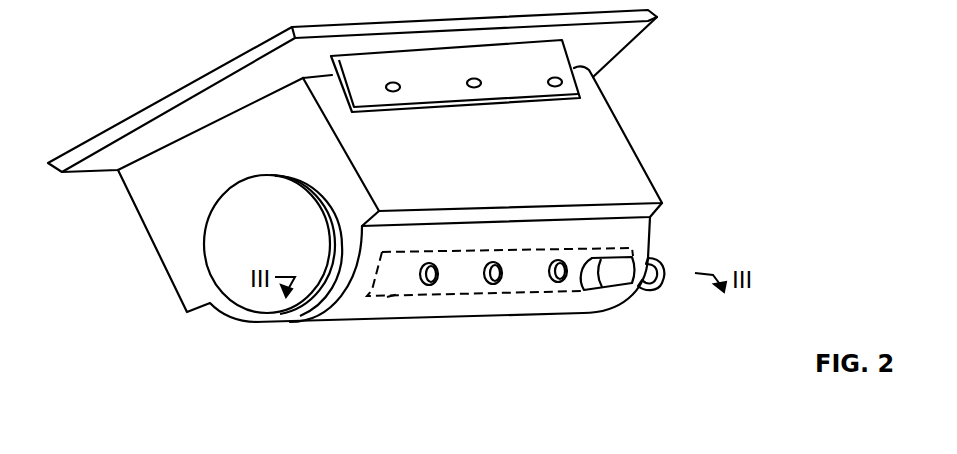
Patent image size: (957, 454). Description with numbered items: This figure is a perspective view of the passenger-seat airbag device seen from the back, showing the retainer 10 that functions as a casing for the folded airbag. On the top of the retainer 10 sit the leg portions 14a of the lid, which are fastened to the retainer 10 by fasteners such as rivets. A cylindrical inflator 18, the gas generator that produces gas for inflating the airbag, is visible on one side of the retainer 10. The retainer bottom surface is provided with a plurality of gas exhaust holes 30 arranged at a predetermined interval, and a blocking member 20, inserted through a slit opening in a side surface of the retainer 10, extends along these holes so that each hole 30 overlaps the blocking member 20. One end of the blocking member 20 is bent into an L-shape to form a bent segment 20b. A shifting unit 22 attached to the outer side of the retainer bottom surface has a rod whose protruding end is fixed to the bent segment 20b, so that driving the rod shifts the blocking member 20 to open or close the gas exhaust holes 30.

The retainer 10 is at (622, 158).
The leg portions 14a is at (511, 82).
The cylindrical inflator 18 is at (233, 220).
The blocking member 20 is at (387, 300).
The bent segment 20b is at (662, 266).
The shifting unit 22 is at (608, 281).
The gas exhaust holes 30 is at (429, 285).